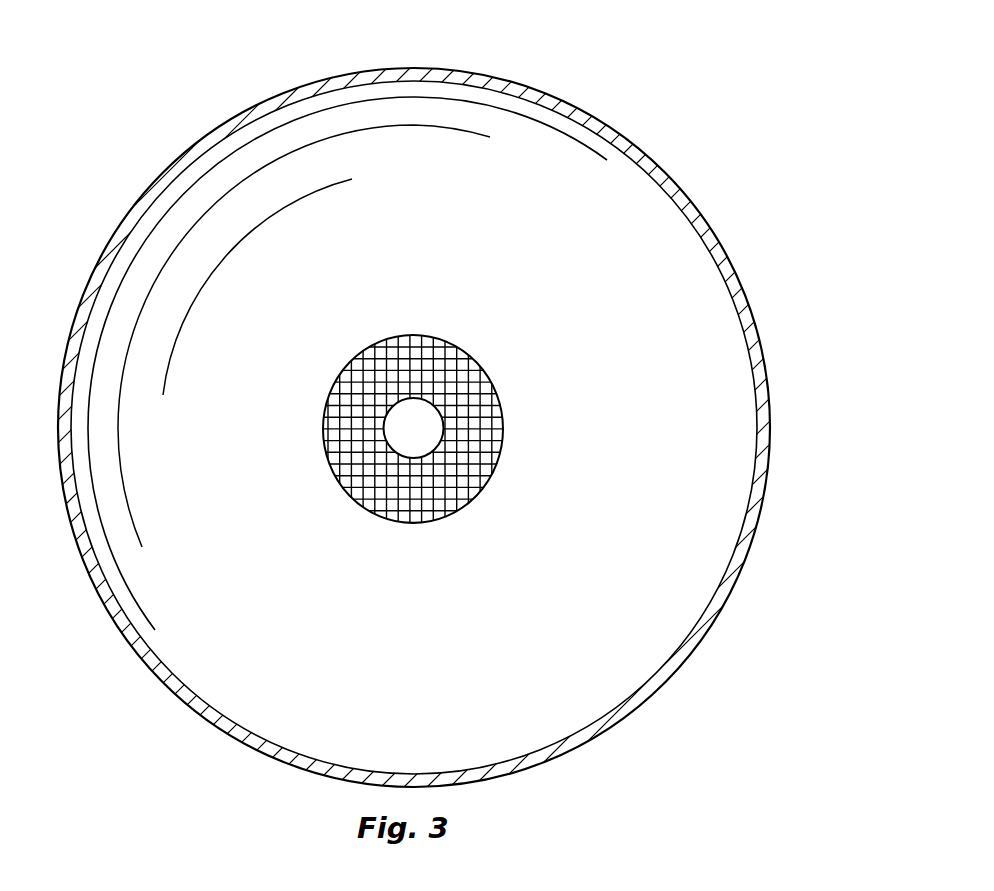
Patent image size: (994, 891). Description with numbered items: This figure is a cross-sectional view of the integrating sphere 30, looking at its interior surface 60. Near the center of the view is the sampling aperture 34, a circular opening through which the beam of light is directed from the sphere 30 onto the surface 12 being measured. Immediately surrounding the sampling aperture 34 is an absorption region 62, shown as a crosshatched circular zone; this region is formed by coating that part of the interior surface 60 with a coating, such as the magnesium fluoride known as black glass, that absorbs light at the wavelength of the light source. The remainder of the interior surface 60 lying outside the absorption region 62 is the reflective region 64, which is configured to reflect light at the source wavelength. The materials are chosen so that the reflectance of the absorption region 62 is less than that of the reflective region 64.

The surface 12 is at (425, 440).
The integrating sphere 30 is at (733, 582).
The sampling aperture 34 is at (386, 440).
The interior surface 60 is at (573, 667).
The absorption region 62 is at (478, 435).
The reflective region 64 is at (427, 688).